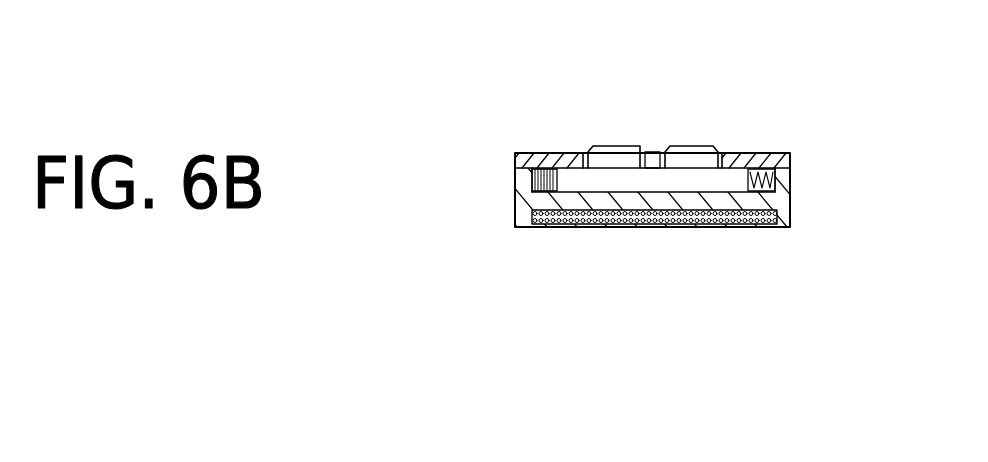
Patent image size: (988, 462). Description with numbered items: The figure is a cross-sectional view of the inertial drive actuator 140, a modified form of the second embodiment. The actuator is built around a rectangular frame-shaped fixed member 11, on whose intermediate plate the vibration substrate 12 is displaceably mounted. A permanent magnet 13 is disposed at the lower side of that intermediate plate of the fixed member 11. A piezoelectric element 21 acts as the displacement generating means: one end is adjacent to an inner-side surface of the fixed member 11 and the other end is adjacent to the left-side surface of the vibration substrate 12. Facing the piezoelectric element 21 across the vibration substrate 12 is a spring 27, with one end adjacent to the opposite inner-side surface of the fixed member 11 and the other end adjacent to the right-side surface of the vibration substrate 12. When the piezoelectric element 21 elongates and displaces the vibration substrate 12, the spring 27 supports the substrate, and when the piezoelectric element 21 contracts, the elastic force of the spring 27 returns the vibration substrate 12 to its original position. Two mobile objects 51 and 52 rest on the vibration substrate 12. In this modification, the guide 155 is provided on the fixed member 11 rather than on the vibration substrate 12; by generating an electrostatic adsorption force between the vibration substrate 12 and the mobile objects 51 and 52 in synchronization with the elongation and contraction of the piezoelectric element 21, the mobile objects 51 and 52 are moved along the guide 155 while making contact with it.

The inertial drive actuator 140 is at (693, 436).
The fixed member 11 is at (523, 203).
The vibration substrate 12 is at (587, 180).
The permanent magnet 13 is at (676, 215).
The piezoelectric element 21 is at (545, 178).
The spring 27 is at (770, 174).
The mobile object 51 is at (615, 144).
The mobile object 52 is at (690, 144).
The guide 155 is at (593, 144).